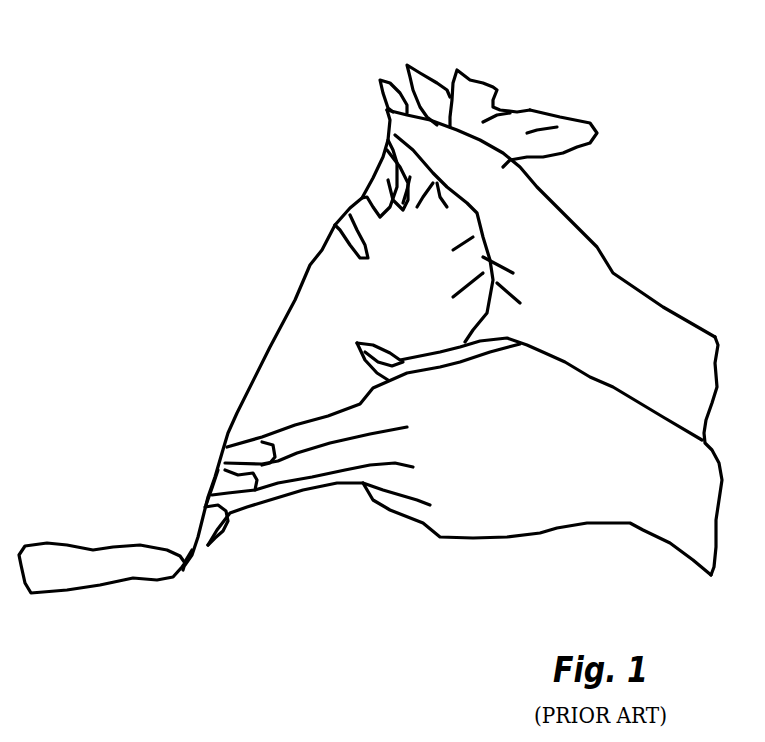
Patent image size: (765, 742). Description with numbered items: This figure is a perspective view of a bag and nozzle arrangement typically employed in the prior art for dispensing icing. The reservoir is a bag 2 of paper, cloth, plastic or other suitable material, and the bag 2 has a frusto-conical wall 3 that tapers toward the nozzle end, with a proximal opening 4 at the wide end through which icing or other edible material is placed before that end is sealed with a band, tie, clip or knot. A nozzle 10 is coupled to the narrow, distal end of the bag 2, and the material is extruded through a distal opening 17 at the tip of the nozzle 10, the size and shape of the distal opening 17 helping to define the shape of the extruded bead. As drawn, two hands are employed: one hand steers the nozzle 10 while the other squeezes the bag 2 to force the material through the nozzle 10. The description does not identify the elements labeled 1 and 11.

The root/tuber 1 is at (110, 630).
The bag 2 is at (250, 260).
The frusto-conical wall 3 is at (307, 367).
The proximal opening 4 is at (497, 93).
The nozzle 10 is at (232, 558).
The stem section held by fingers 11 is at (207, 496).
The distal opening 17 is at (186, 562).